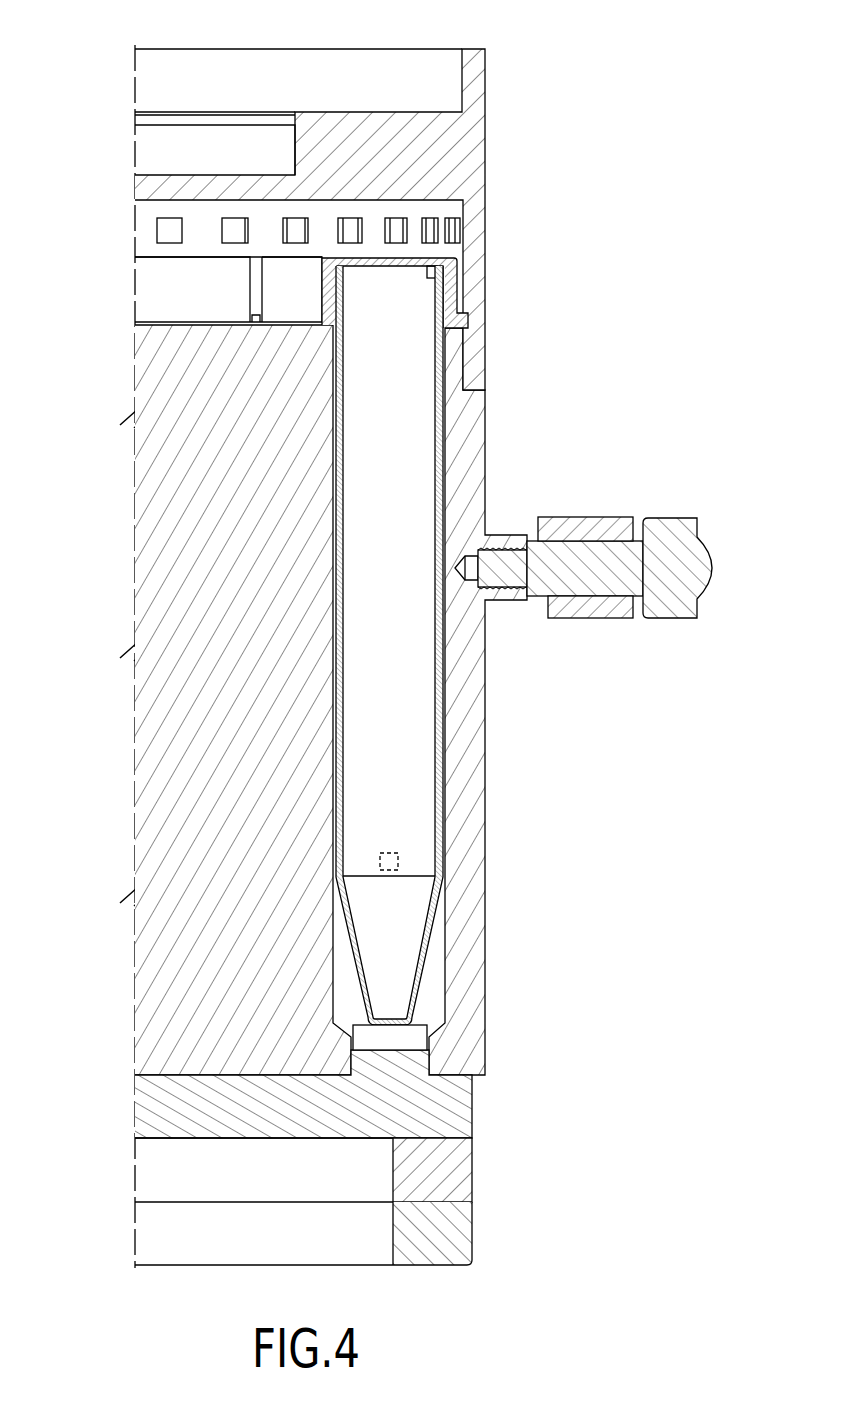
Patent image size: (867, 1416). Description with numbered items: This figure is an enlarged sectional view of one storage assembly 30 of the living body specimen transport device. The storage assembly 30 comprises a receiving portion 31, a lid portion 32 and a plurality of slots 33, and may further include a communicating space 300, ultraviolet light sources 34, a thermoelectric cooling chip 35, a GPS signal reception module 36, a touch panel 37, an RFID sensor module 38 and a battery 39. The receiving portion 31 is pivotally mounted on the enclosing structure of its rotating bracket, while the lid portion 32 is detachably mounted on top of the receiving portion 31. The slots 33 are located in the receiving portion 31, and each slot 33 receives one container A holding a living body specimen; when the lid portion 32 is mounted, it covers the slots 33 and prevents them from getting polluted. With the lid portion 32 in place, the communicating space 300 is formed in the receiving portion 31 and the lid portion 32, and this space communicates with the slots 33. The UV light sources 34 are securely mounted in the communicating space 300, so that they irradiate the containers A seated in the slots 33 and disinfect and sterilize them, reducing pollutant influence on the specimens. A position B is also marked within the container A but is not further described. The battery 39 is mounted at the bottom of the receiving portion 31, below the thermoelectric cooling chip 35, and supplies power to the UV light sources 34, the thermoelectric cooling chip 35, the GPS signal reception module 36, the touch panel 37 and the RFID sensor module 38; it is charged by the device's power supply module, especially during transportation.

The storage assembly 30 is at (373, 637).
The receiving portion 31 is at (175, 570).
The lid portion 32 is at (450, 158).
The slots 33 is at (430, 995).
The ultraviolet light source 34 is at (238, 235).
The thermoelectric cooling chip 35 is at (182, 1170).
The global positioning system signal reception module 36 is at (235, 150).
The touch panel 37 is at (322, 77).
The radio-frequency identification sensor module 38 is at (408, 1036).
The battery 39 is at (175, 1235).
The communicating space 300 is at (131, 232).
The container A is at (402, 760).
The sample position B is at (392, 861).